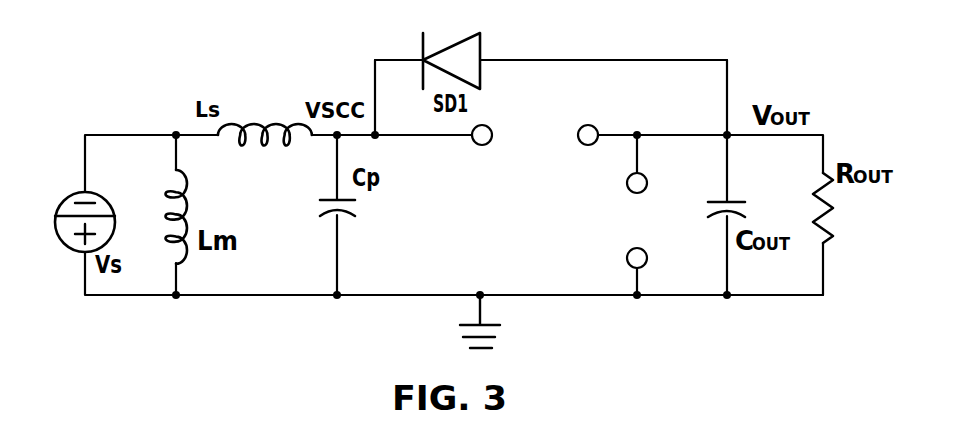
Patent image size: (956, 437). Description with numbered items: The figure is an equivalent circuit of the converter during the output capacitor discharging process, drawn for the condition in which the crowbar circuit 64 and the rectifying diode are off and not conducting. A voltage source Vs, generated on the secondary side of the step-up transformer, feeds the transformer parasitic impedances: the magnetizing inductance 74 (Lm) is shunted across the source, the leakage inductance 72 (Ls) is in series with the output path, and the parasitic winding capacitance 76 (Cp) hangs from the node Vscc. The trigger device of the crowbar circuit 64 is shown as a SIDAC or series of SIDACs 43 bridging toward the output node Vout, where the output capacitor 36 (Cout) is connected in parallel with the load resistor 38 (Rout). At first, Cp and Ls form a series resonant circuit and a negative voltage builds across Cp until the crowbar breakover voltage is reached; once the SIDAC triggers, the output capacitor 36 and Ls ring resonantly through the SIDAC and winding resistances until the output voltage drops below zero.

The leakage inductance 72 is at (282, 124).
The magnetizing inductance 74 is at (187, 197).
The parasitic capacitance 76 is at (327, 214).
The SIDAC 43 is at (482, 64).
The crowbar circuit 64 is at (715, 95).
The output capacitor 36 is at (718, 214).
The resistor 38 is at (822, 190).